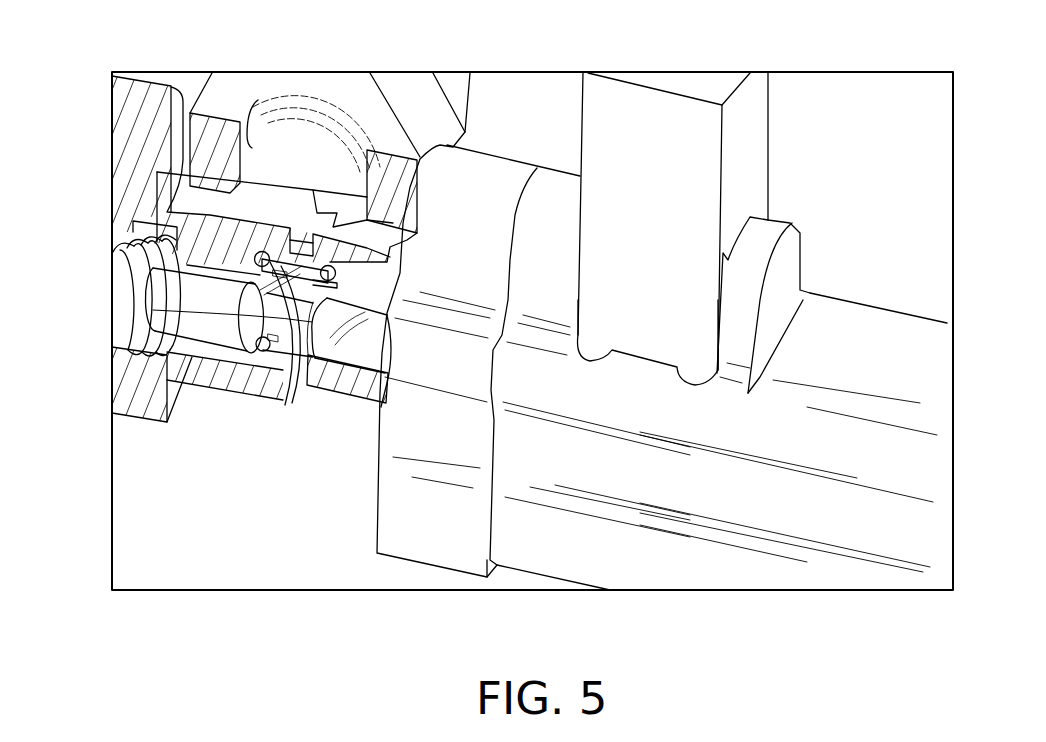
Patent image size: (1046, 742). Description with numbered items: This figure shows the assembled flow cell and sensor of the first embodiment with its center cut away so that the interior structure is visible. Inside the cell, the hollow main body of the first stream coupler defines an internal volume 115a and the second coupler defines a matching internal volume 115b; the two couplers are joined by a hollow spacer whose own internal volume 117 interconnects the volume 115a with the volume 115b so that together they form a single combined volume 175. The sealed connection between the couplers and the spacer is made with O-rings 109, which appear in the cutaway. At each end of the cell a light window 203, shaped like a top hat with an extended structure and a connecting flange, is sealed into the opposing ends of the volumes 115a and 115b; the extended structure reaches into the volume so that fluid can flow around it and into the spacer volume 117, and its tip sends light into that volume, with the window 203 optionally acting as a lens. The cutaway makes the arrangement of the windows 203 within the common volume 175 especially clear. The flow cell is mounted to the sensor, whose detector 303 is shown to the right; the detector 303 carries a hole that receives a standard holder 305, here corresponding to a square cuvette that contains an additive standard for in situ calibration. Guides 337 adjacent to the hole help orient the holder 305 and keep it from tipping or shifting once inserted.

The O-rings 109 is at (313, 345).
The light window 203 is at (153, 310).
The internal volume of the hollow spacer 117 is at (278, 340).
The combined volume 175 is at (332, 318).
The internal volume of the first stream coupler 115a is at (197, 327).
The internal volume of the second stream coupler 115b is at (353, 363).
The standard holder 305 is at (760, 108).
The guides 337 is at (557, 193).
The detector 303 is at (877, 335).